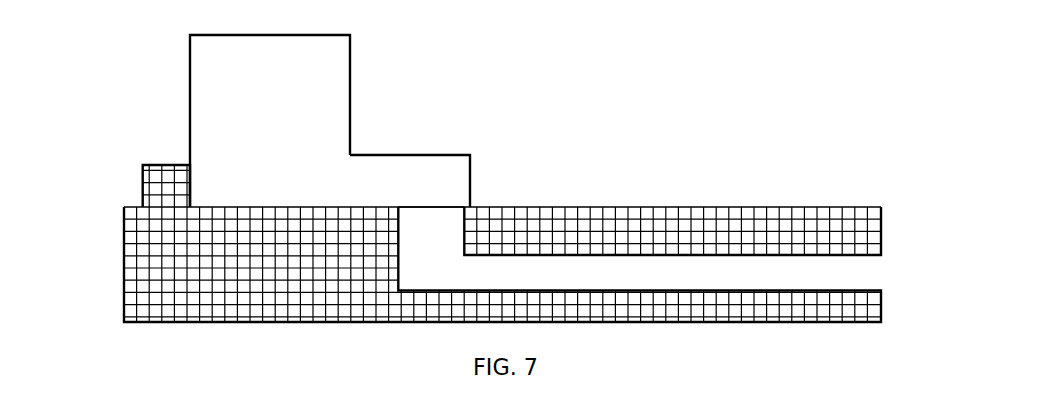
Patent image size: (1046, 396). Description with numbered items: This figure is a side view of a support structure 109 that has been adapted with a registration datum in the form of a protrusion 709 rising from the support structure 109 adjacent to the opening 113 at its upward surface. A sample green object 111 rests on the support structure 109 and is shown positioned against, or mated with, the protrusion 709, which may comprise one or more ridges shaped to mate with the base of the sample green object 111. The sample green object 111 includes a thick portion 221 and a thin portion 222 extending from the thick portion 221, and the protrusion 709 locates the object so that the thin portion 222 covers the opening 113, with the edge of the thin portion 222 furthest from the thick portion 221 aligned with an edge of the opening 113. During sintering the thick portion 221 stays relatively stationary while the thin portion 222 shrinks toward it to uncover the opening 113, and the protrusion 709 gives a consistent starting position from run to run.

The support structure 109 is at (753, 223).
The protrusion 709 is at (143, 182).
The sample green object 111 is at (287, 121).
The thick portion 221 is at (275, 134).
The thin portion 222 is at (432, 189).
The opening 113 is at (462, 196).